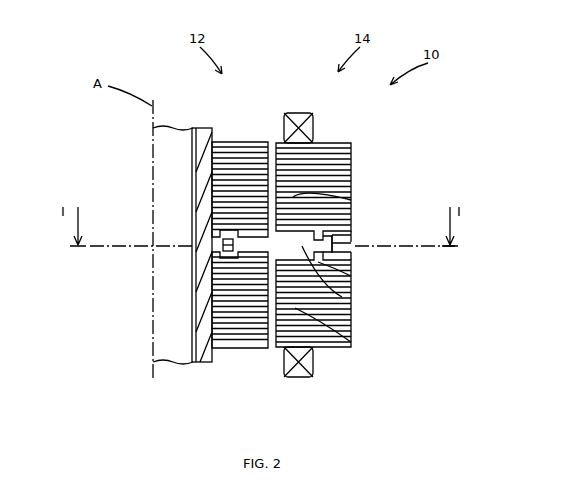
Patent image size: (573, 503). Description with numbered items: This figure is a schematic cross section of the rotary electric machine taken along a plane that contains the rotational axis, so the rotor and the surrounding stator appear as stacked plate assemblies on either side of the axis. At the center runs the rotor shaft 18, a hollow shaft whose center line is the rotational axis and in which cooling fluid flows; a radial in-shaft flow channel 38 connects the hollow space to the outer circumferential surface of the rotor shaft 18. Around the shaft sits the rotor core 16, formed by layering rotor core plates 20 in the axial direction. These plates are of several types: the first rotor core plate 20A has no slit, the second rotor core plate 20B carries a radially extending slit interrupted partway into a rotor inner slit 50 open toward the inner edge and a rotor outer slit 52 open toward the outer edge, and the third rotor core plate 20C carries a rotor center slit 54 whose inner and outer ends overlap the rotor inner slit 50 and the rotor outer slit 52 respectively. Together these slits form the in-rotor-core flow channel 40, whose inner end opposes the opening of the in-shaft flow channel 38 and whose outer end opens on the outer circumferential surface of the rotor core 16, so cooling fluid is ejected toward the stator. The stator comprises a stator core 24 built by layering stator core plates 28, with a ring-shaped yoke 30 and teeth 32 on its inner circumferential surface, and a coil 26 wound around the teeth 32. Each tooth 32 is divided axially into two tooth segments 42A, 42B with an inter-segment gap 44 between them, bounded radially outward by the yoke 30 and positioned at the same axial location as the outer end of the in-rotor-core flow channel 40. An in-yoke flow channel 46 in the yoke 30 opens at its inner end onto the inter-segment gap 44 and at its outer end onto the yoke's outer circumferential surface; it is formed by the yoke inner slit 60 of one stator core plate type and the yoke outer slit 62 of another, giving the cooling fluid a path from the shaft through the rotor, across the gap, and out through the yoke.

The rotor core 16 is at (252, 142).
The rotor shaft 18 is at (202, 127).
The rotor core plates 20 is at (232, 142).
The first rotor core plate 20A is at (198, 137).
The second rotor core plate 20B is at (210, 262).
The third rotor core plate 20C is at (212, 272).
The stator core 24 is at (346, 143).
The coil 26 is at (300, 113).
The stator core plates 28 is at (352, 146).
The yoke 30 is at (314, 136).
The teeth 32 is at (284, 118).
The in-shaft flow channel 38 is at (222, 246).
The in-rotor-core flow channel 40 is at (254, 255).
The tooth segment 42A is at (351, 200).
The tooth segment 42B is at (351, 342).
The inter-segment gap 44 is at (342, 297).
The in-yoke flow channel 46 is at (351, 276).
The rotor inner slit 50 is at (220, 240).
The rotor outer slit 52 is at (245, 255).
The rotor center slit 54 is at (232, 212).
The yoke inner slit 60 is at (340, 228).
The yoke outer slit 62 is at (345, 243).